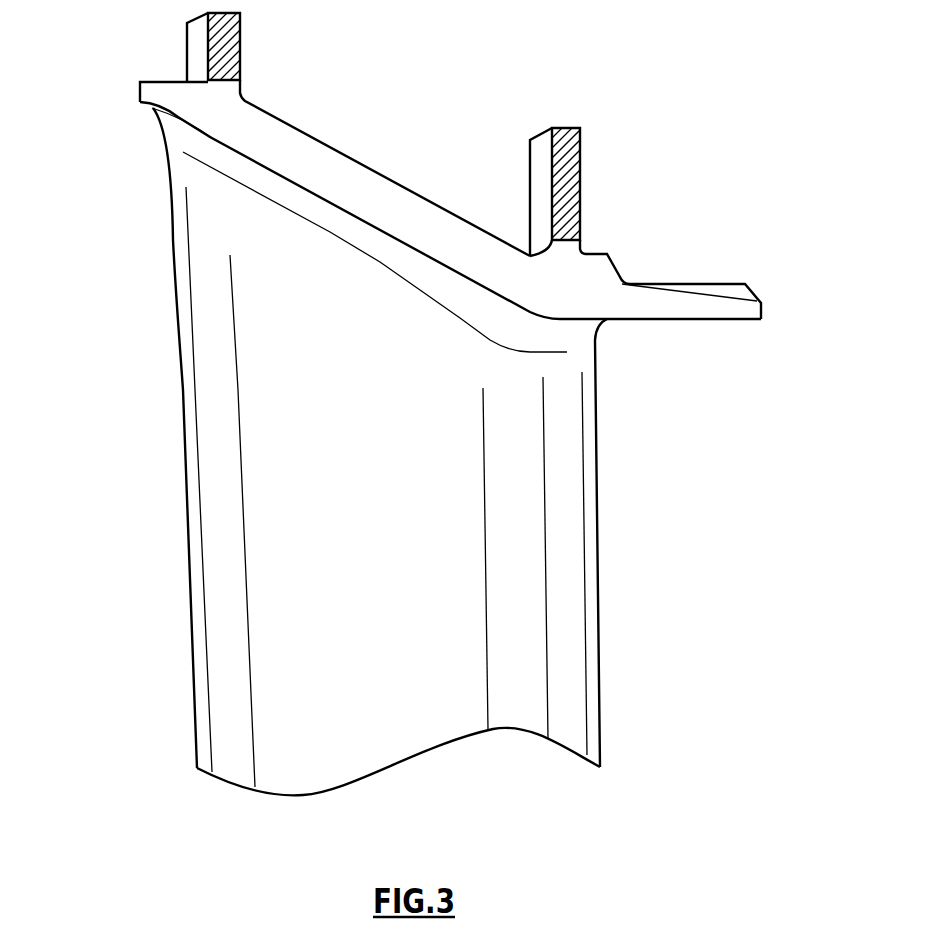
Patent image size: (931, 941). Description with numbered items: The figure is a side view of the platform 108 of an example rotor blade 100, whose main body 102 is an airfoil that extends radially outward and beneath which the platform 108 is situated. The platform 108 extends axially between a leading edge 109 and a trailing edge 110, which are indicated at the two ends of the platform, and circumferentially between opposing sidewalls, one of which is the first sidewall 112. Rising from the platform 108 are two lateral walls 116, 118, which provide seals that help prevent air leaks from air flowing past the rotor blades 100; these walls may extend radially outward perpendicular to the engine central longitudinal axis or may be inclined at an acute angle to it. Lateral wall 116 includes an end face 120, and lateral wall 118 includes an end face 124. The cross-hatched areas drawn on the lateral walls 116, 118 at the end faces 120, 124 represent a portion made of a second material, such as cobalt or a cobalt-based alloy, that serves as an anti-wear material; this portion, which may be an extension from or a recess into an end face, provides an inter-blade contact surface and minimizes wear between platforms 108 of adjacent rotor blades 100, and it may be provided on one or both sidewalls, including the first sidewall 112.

The rotor blade 100 is at (653, 470).
The main body 102 is at (197, 327).
The platform 108 is at (378, 152).
The leading edge 109 is at (783, 300).
The trailing edge 110 is at (118, 92).
The first sidewall 112 is at (478, 265).
The lateral wall 116 is at (538, 172).
The lateral wall 118 is at (200, 35).
The end face 120 is at (568, 170).
The end face 124 is at (232, 51).